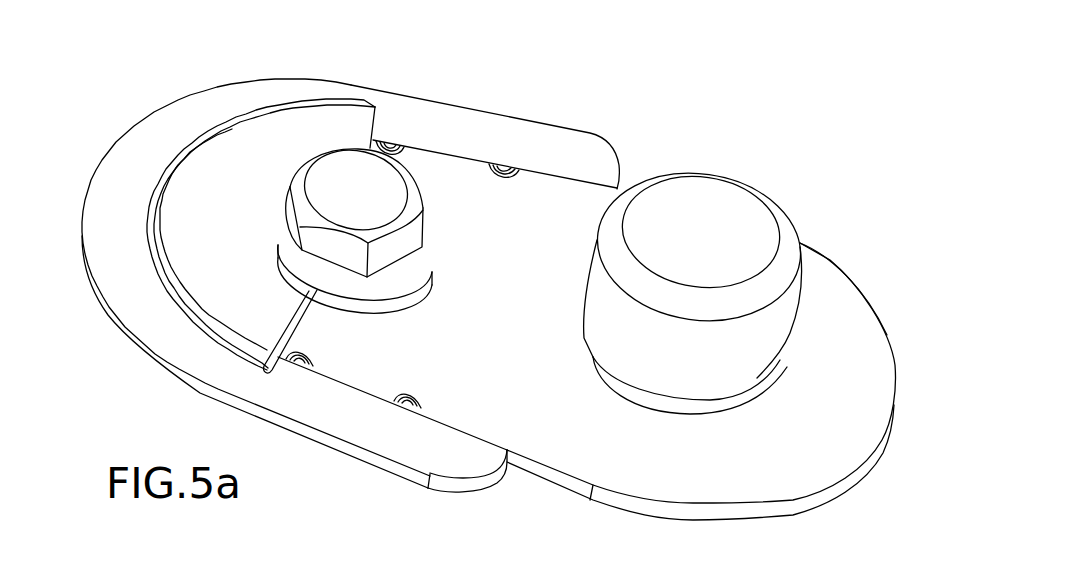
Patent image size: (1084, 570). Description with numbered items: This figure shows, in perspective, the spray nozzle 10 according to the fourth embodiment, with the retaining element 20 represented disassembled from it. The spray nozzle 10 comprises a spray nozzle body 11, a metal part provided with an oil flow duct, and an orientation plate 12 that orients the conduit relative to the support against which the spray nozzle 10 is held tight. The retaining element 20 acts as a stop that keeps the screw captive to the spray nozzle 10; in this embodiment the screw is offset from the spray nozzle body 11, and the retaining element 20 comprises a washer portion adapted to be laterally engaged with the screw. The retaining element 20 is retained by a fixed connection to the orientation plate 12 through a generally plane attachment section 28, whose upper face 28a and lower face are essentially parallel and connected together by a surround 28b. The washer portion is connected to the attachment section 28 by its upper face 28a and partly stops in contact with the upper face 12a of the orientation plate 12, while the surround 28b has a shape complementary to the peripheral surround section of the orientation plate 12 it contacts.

The spray nozzle 10 is at (113, 90).
The spray nozzle body 11 is at (723, 197).
The orientation plate 12 is at (833, 427).
The upper face of the orientation plate 12a is at (823, 305).
The retaining element 20 is at (208, 100).
The attachment section 28 is at (558, 137).
The upper face of the attachment section 28a is at (390, 117).
The surround 28b is at (359, 452).